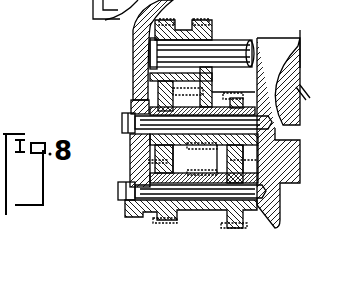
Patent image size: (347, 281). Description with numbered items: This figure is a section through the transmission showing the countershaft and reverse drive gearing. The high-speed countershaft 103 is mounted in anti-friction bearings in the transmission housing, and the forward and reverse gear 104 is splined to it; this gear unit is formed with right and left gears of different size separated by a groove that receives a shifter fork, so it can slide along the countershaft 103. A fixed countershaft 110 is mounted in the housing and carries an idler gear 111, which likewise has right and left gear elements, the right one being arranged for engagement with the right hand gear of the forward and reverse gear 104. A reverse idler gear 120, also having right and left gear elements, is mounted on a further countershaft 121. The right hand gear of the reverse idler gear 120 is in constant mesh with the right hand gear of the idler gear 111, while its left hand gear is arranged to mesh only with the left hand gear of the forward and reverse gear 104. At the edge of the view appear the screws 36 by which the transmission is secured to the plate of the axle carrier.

The screws 36 is at (93, 2).
The high-speed countershaft 103 is at (215, 38).
The forward and reverse gear 104 is at (212, 30).
The fixed countershaft 110 is at (118, 190).
The idler gear 111 is at (175, 217).
The reverse idler gear 120 is at (218, 106).
The countershaft 121 is at (122, 120).